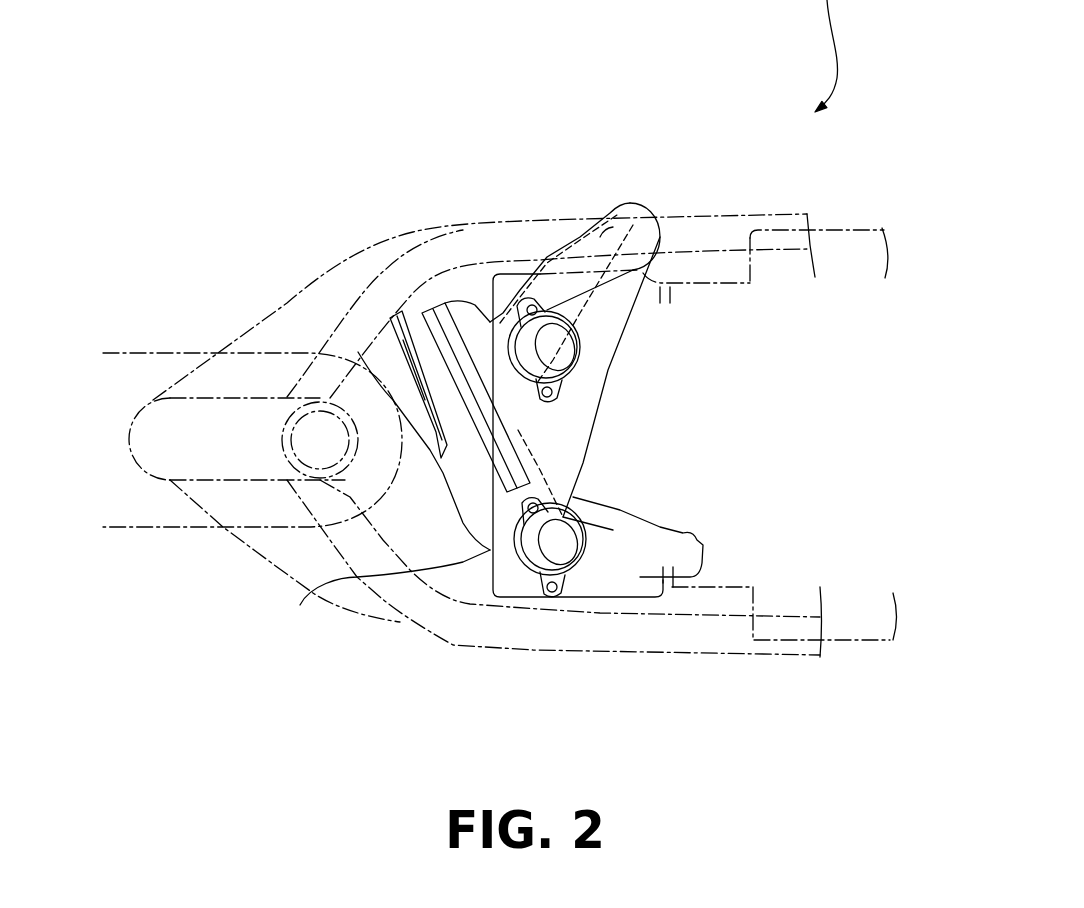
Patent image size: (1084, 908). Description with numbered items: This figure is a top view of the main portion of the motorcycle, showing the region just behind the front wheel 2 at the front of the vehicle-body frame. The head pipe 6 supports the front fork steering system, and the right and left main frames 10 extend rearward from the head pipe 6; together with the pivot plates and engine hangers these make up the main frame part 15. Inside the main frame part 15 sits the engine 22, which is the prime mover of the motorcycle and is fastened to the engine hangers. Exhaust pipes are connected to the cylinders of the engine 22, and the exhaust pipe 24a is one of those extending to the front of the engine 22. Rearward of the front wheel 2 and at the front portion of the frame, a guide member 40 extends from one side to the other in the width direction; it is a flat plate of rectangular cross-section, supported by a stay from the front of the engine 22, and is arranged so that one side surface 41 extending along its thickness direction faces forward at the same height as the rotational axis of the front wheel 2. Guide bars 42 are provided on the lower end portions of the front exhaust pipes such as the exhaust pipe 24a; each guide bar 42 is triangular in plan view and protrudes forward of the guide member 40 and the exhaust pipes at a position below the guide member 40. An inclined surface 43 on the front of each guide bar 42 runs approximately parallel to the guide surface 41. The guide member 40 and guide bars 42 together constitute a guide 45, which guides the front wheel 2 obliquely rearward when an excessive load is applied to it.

The front wheel 2 is at (143, 375).
The head pipe 6 is at (243, 397).
The main frames 10 is at (706, 230).
The main frame part 15 is at (680, 197).
The engine 22 is at (853, 233).
The exhaust pipe 24a is at (603, 242).
The guide member 40 is at (421, 308).
The guide surface 41 is at (398, 355).
The guide bars 42 is at (490, 337).
The inclined surface 43 is at (358, 352).
The guide 45 is at (530, 427).